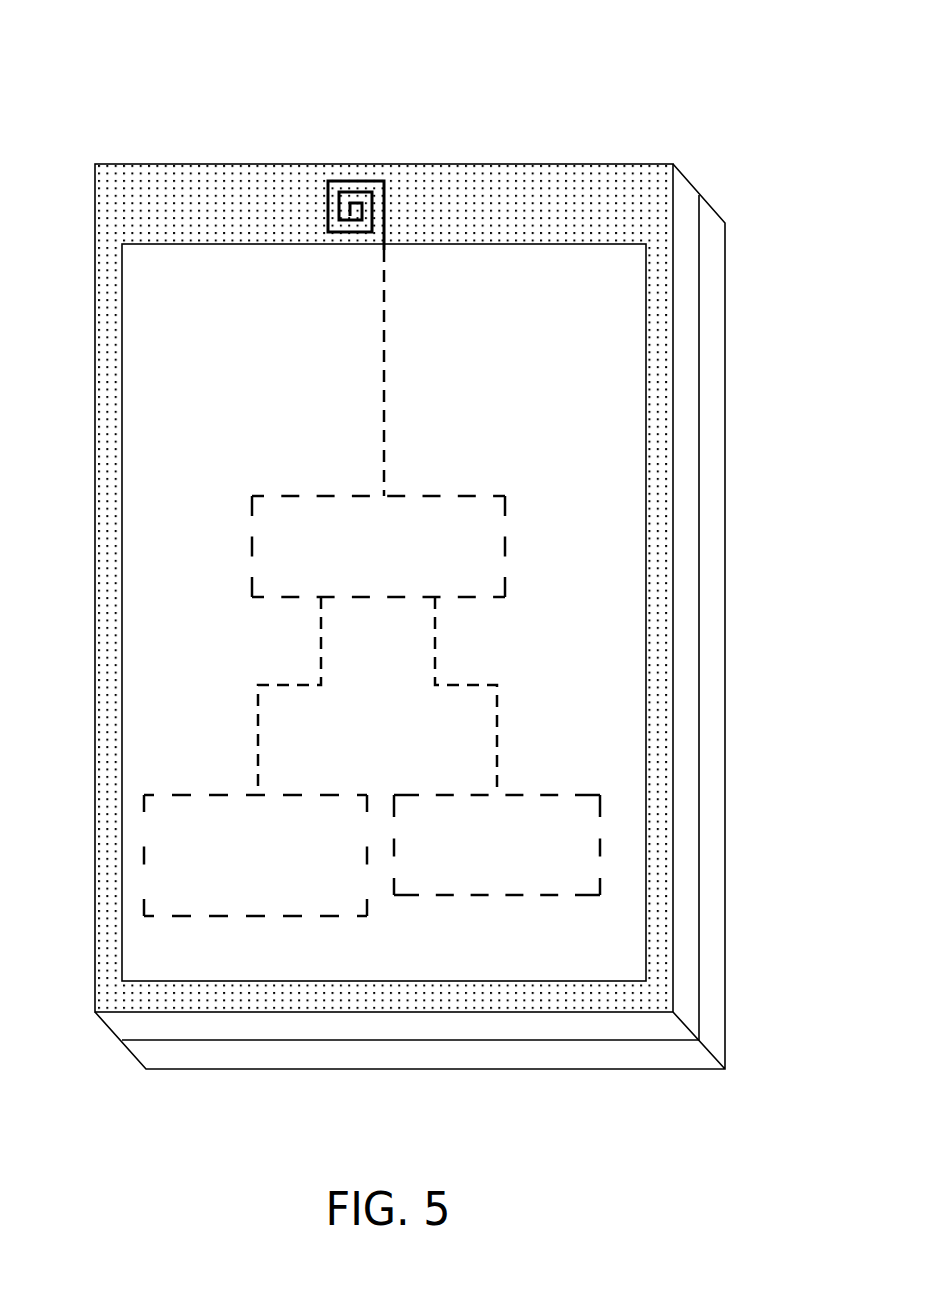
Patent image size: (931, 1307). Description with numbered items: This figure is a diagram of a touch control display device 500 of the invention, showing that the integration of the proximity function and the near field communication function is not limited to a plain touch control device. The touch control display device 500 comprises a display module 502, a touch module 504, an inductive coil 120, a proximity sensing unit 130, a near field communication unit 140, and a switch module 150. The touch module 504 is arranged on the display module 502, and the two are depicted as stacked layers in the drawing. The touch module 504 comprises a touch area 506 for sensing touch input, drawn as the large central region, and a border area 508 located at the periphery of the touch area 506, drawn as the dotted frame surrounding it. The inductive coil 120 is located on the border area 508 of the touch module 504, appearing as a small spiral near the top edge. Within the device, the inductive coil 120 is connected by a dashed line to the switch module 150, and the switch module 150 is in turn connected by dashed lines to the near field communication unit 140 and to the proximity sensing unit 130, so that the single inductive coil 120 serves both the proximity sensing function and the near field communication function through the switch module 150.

The touch control display device 500 is at (651, 83).
The display module 502 is at (710, 369).
The touch module 504 is at (685, 488).
The touch area 506 is at (610, 578).
The border area 508 is at (660, 440).
The inductive coil 120 is at (352, 178).
The proximity sensing unit 130 is at (553, 795).
The near field communication unit 140 is at (200, 795).
The switch module 150 is at (297, 496).